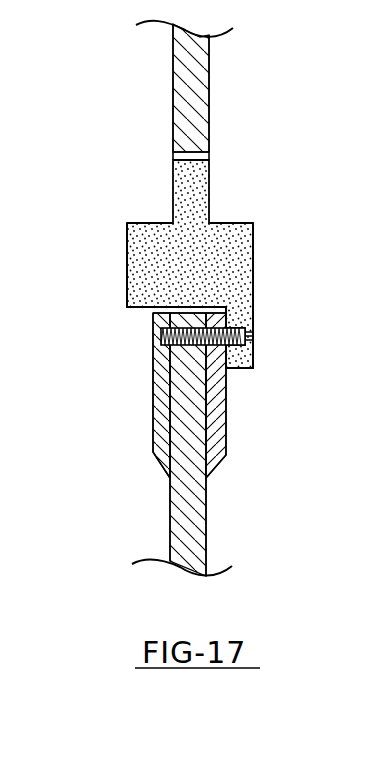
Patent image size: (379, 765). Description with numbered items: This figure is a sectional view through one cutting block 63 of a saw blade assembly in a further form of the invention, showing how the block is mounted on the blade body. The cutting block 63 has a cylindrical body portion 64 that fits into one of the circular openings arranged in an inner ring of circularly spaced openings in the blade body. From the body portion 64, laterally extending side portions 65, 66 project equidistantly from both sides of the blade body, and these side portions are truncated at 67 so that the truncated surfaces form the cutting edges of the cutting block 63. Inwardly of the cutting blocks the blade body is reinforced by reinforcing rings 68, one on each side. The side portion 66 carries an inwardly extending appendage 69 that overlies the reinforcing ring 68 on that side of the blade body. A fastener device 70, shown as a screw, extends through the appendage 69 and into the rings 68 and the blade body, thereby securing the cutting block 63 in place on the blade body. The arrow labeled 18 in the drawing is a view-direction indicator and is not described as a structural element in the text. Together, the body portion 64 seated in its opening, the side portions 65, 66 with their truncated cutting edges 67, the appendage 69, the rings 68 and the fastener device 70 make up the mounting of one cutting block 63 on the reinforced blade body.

The fastener assembly 18 is at (270, 282).
The cutting block 63 is at (272, 312).
The cylindrical body portion 64 is at (210, 182).
The side portion 65 is at (147, 268).
The side portion 66 is at (240, 247).
The truncation forming cutting edges 67 is at (148, 222).
The reinforcing ring 68 is at (160, 445).
The appendage 69 is at (255, 357).
The fastener device 70 is at (238, 348).